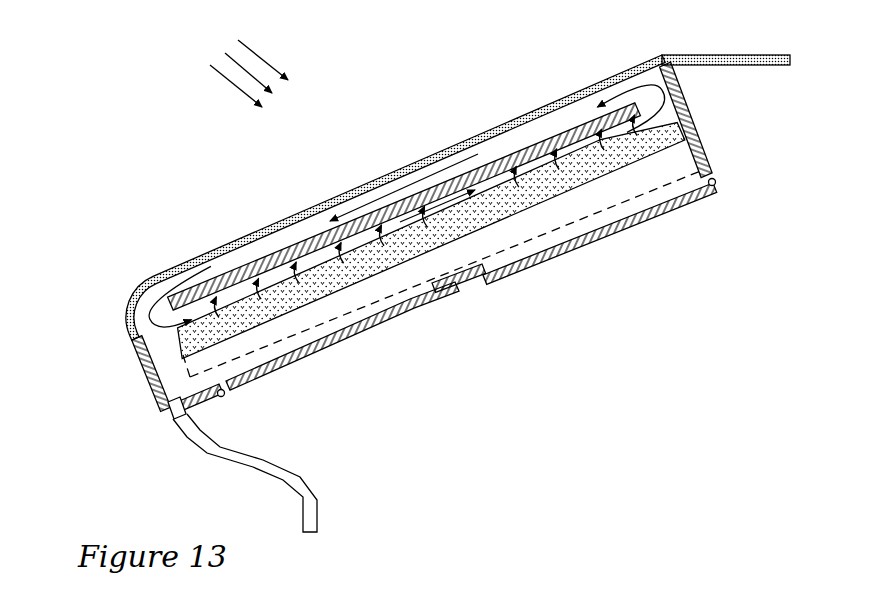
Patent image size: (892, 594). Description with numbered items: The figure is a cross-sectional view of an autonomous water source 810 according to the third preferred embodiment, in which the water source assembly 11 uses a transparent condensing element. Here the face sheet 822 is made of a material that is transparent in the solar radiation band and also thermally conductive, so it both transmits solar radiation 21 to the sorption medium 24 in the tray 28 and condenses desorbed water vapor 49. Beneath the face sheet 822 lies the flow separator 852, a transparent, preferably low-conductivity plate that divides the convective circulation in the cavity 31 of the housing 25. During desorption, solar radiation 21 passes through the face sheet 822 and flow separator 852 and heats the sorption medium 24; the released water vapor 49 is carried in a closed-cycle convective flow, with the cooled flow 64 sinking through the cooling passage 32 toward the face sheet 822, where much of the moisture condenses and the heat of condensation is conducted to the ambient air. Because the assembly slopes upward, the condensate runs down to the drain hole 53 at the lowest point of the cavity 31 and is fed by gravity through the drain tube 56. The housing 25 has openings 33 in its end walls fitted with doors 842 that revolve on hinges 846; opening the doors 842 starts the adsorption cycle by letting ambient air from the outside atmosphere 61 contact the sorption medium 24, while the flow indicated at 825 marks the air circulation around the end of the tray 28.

The autonomous water source 810 is at (162, 107).
The solar radiation 21 is at (255, 52).
The water source assembly 11 is at (475, 130).
The flow separator 852 is at (500, 153).
The face sheet 822 is at (425, 150).
The cooled flow 64 is at (320, 203).
The cooling passage 32 is at (223, 265).
The water vapor 49 is at (245, 297).
The flow return at end 825 is at (123, 336).
The cavity 31 is at (160, 337).
The drain hole 53 is at (168, 418).
The drain tube 56 is at (303, 507).
The hinges 846 is at (224, 397).
The doors 842 is at (303, 366).
The sorption medium 24 is at (543, 254).
The housing 25 is at (467, 283).
The tray 28 is at (335, 330).
The openings 33 is at (370, 306).
The outside atmosphere 61 is at (644, 478).